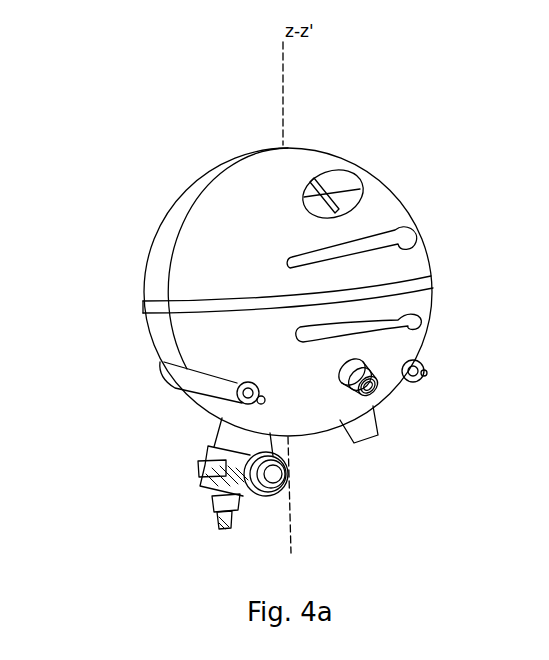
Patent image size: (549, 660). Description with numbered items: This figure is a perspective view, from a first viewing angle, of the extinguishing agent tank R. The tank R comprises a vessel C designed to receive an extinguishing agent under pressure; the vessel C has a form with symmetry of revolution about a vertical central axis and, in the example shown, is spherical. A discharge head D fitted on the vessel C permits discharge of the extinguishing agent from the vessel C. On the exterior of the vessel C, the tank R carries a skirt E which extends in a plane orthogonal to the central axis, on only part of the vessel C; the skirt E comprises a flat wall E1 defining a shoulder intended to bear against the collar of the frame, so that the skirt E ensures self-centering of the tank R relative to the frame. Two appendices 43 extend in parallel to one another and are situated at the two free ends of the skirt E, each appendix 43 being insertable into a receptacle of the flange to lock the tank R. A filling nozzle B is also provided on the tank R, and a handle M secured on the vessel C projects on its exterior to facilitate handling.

The extinguishing agent tank R is at (128, 233).
The vessel C is at (207, 217).
The handle M is at (399, 247).
The skirt E is at (175, 372).
The flat wall E1 is at (182, 397).
The appendices 43 is at (425, 379).
The discharge head D is at (200, 488).
The filling nozzle B is at (376, 396).